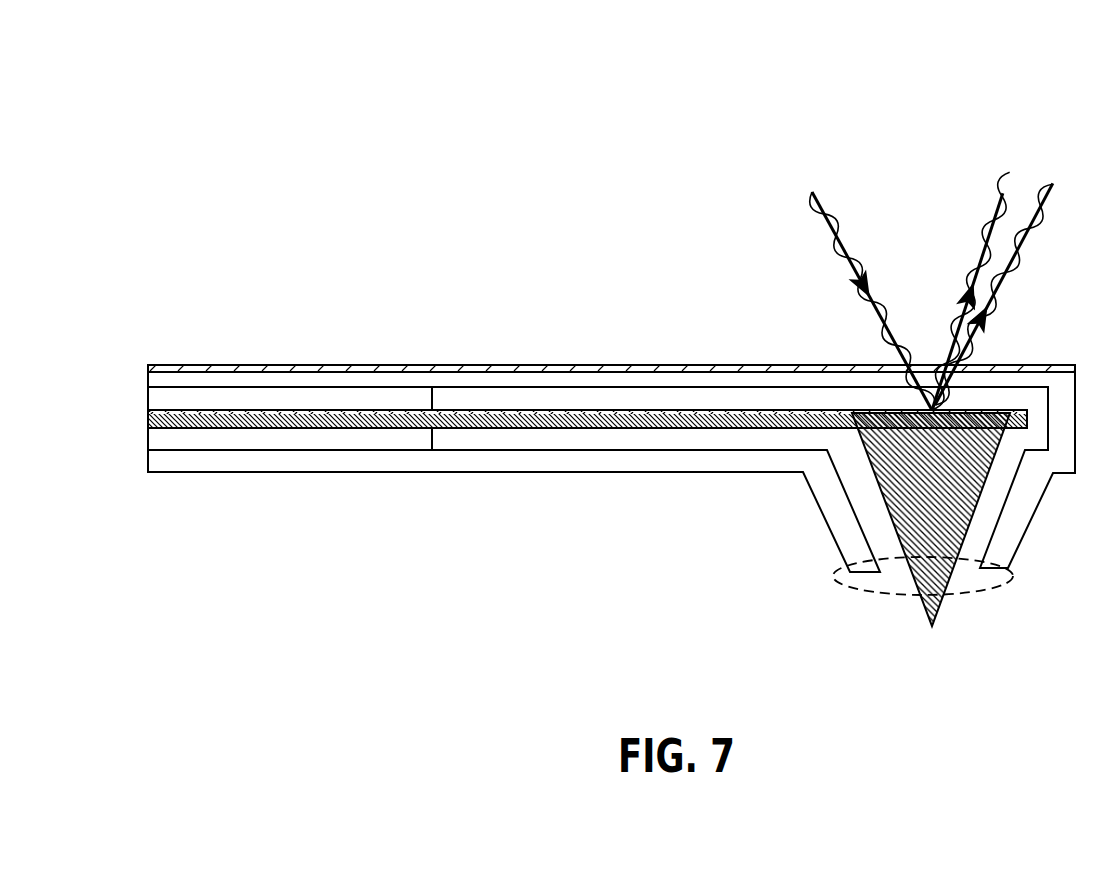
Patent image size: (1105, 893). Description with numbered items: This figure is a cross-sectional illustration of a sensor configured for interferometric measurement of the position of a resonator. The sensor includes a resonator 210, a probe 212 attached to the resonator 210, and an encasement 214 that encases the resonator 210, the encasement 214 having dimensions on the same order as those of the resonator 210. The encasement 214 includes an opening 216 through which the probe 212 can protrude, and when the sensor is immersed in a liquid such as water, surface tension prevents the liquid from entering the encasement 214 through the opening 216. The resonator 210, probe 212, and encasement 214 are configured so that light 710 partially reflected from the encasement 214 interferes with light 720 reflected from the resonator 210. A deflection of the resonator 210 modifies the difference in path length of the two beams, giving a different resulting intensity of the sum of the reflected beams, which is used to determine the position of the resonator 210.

The resonator 210 is at (542, 410).
The probe 212 is at (987, 492).
The encasement 214 is at (147, 460).
The opening 216 is at (953, 590).
The light 710 is at (963, 250).
The light 720 is at (1045, 187).